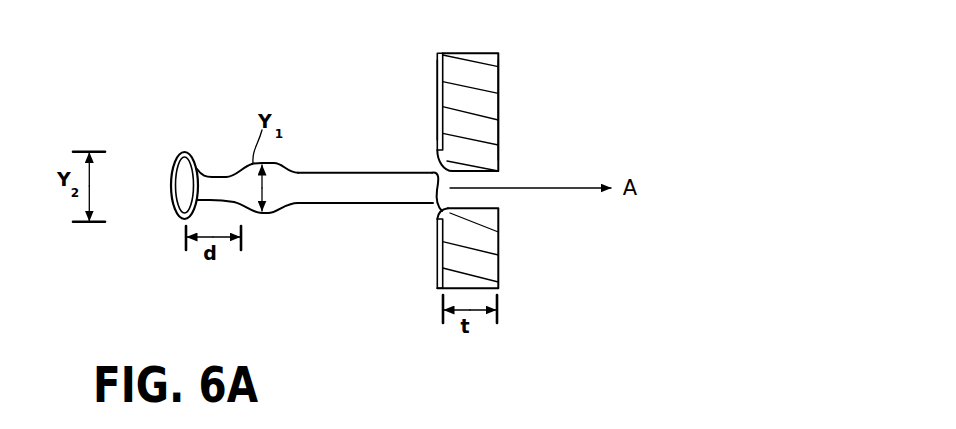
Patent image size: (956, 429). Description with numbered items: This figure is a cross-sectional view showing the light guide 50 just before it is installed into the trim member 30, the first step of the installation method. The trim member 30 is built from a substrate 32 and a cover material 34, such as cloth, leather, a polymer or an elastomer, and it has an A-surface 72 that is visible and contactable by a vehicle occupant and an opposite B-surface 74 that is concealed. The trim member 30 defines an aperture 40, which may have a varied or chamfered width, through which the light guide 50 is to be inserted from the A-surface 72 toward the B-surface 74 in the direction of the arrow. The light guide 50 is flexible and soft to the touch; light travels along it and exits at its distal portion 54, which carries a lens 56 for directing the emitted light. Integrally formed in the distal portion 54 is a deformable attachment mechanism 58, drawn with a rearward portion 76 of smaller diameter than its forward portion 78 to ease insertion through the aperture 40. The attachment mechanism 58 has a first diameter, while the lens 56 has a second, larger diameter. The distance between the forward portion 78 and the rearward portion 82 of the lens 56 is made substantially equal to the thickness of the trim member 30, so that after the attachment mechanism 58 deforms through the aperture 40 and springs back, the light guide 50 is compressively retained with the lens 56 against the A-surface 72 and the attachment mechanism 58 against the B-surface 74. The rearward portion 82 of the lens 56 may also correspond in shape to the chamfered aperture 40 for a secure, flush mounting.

The trim member 30 is at (475, 149).
The substrate 32 is at (500, 88).
The cover material 34 is at (437, 55).
The aperture 40 is at (437, 214).
The light guide 50 is at (366, 191).
The distal portion 54 is at (217, 175).
The lens 56 is at (170, 190).
The deformable attachment mechanism 58 is at (272, 210).
The A-surface 72 is at (435, 95).
The B-surface 74 is at (507, 143).
The rearward portion 76 is at (288, 166).
The forward portion 78 is at (234, 167).
The rearward portion of lens 82 is at (206, 163).